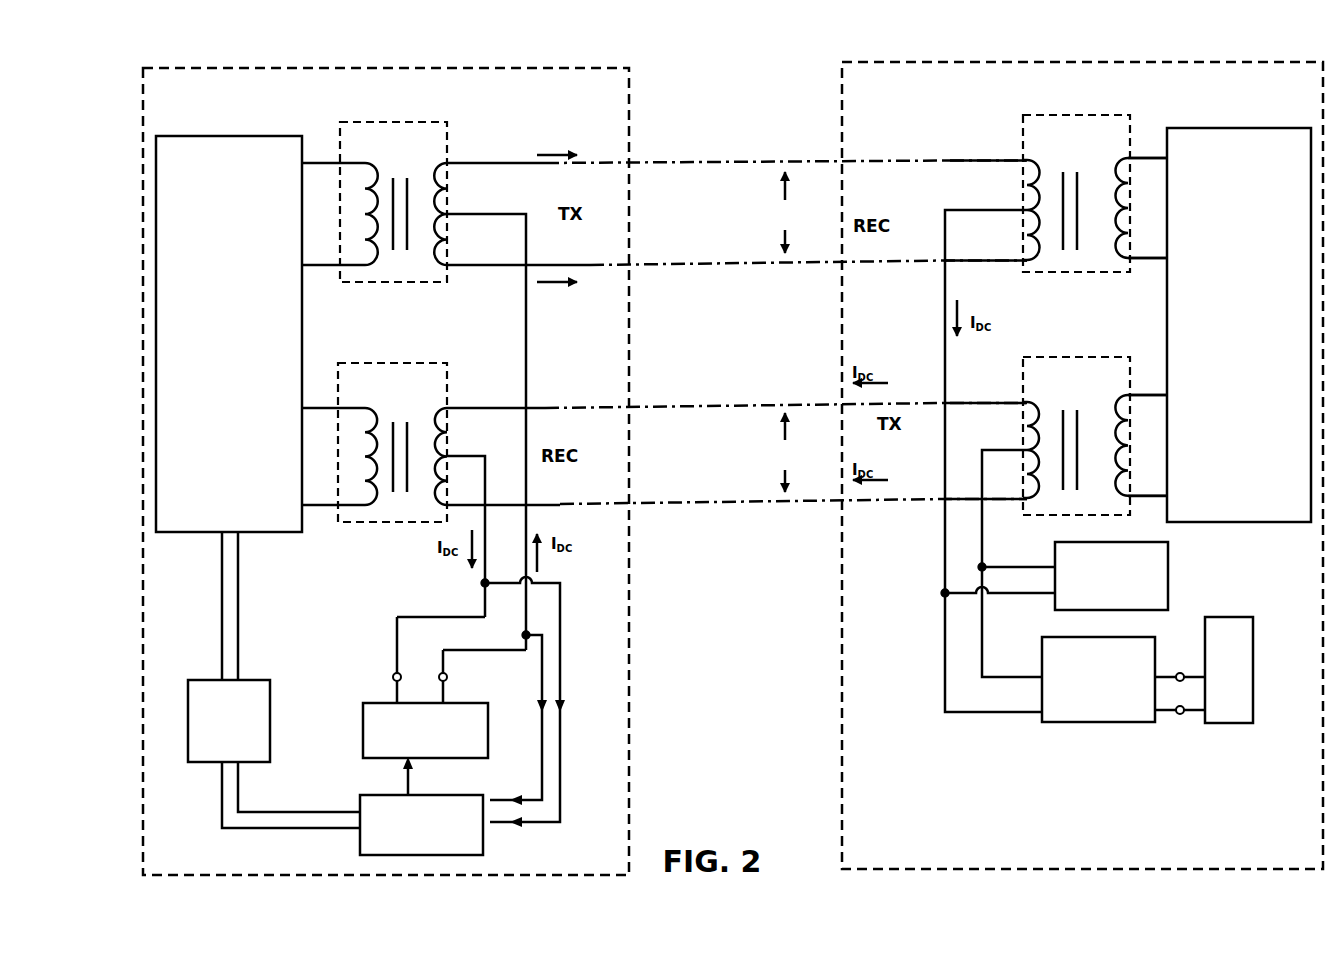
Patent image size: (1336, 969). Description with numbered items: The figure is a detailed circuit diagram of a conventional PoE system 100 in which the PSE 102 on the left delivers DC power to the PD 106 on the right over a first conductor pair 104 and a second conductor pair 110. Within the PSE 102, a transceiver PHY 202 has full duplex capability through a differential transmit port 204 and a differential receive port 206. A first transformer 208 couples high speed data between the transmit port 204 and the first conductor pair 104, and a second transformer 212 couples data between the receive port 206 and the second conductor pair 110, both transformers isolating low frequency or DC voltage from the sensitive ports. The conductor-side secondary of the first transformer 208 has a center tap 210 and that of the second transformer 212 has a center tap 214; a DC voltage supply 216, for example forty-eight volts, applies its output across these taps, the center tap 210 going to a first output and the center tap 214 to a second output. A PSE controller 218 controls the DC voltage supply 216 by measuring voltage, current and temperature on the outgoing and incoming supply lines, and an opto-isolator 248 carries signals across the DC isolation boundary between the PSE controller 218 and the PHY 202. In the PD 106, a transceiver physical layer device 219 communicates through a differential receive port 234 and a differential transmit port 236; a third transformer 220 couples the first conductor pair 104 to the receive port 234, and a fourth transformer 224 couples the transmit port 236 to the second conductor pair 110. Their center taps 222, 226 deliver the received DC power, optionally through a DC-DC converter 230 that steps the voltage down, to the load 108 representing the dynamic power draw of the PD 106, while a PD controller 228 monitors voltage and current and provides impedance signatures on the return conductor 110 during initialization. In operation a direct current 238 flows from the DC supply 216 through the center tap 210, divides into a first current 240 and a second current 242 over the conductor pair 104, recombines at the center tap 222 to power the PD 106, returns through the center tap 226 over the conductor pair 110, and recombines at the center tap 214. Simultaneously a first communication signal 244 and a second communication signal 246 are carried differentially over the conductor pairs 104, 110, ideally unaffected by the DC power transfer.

The PoE system 100 is at (716, 104).
The PSE 102 is at (418, 42).
The first conductor pair 104 is at (693, 228).
The PD 106 is at (1253, 658).
The load 108 is at (1102, 62).
The second conductor pair 110 is at (695, 470).
The transceiver PHY 202 is at (229, 334).
The differential transmit port 204 is at (302, 212).
The differential receive port 206 is at (302, 443).
The first transformer 208 is at (465, 202).
The center tap 210 is at (477, 214).
The second transformer 212 is at (449, 442).
The center tap 214 is at (460, 456).
The DC voltage supply 216 is at (363, 722).
The PSE controller 218 is at (375, 795).
The transceiver physical layer device 219 is at (1239, 325).
The third transformer 220 is at (1095, 193).
The center tap 222 is at (945, 210).
The fourth transformer 224 is at (1095, 436).
The center tap 226 is at (1013, 450).
The PD controller 228 is at (1168, 574).
The DC-DC converter 230 is at (1074, 724).
The differential receive port 234 is at (1167, 199).
The differential transmit port 236 is at (1167, 425).
The direct current 238 is at (488, 697).
The first current 240 is at (544, 138).
The second current 242 is at (563, 318).
The first communication signal 244 is at (786, 212).
The second communication signal 246 is at (786, 452).
The opto-isolator 248 is at (250, 680).